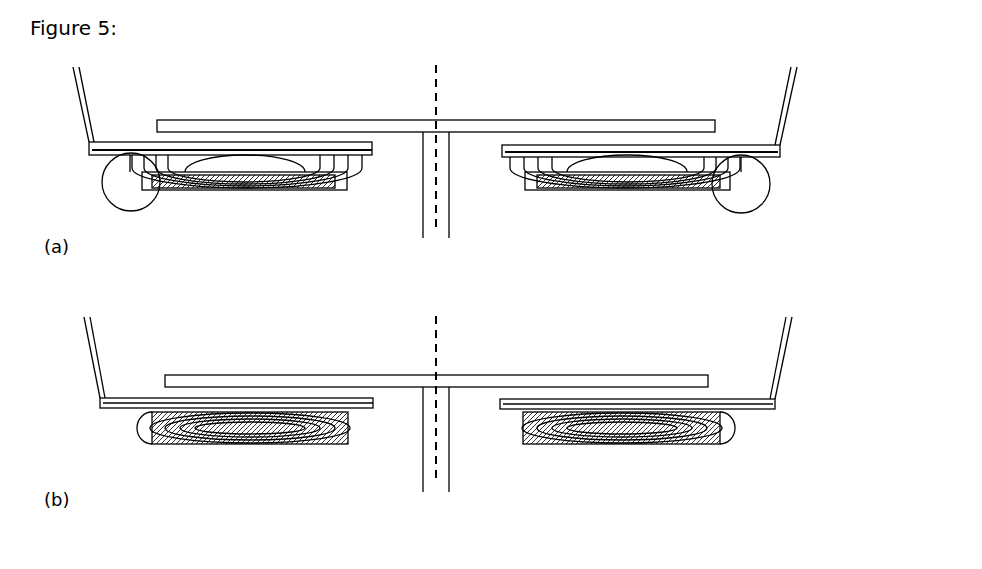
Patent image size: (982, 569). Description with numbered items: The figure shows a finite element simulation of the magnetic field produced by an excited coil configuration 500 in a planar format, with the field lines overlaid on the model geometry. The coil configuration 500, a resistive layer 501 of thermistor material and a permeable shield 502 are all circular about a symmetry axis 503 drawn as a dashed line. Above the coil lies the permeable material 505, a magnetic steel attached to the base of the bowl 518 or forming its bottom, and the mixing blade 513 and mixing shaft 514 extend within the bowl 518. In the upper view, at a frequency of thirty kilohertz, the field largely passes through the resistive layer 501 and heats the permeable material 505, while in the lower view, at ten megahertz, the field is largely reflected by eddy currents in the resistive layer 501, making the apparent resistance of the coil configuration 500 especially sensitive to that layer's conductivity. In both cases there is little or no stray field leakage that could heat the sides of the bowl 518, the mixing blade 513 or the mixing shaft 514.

The coil configuration 500 is at (727, 175).
The resistive layer 501 is at (773, 155).
The permeable shield 502 is at (717, 192).
The symmetry axis 503 is at (436, 87).
The permeable material 505 is at (668, 147).
The mixing blade 513 is at (539, 120).
The mixing shaft 514 is at (446, 218).
The bowl 518 is at (786, 83).